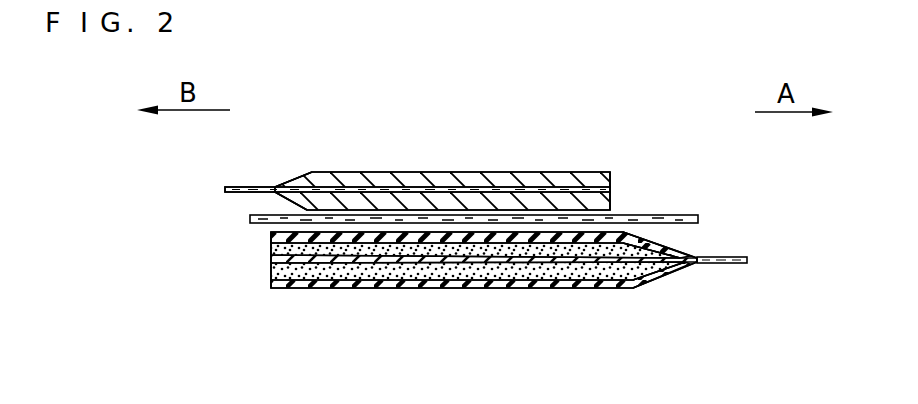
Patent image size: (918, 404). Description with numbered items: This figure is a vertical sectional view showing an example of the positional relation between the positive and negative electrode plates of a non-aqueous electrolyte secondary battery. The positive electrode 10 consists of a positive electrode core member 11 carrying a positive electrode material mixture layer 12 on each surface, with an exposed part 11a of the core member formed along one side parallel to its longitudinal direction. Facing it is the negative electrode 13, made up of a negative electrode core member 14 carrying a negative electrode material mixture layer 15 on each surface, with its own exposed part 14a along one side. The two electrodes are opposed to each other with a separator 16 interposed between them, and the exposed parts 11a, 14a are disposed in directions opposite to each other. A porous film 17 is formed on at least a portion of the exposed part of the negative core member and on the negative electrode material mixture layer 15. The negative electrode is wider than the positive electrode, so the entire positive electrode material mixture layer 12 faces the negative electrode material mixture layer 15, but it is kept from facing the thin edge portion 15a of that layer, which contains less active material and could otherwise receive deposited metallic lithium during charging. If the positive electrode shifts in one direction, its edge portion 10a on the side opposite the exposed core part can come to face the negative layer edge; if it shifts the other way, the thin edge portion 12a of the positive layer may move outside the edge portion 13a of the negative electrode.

The positive electrode 10 is at (495, 102).
The edge portion of the positive electrode material mixture layer 10a is at (612, 172).
The positive electrode core member 11 is at (413, 172).
The exposed part of the positive electrode core member 11a is at (257, 187).
The positive electrode material mixture layer 12 is at (486, 204).
The edge portion of the positive electrode material mixture layer 12a is at (302, 180).
The negative electrode 13 is at (495, 345).
The edge portion of the negative electrode 13a is at (271, 268).
The negative electrode core member 14 is at (431, 256).
The exposed part of the negative electrode core member 14a is at (730, 264).
The negative electrode material mixture layer 15 is at (490, 248).
The edge portion of the negative electrode material mixture layer 15a is at (634, 288).
The separator 16 is at (690, 215).
The porous film 17 is at (347, 234).